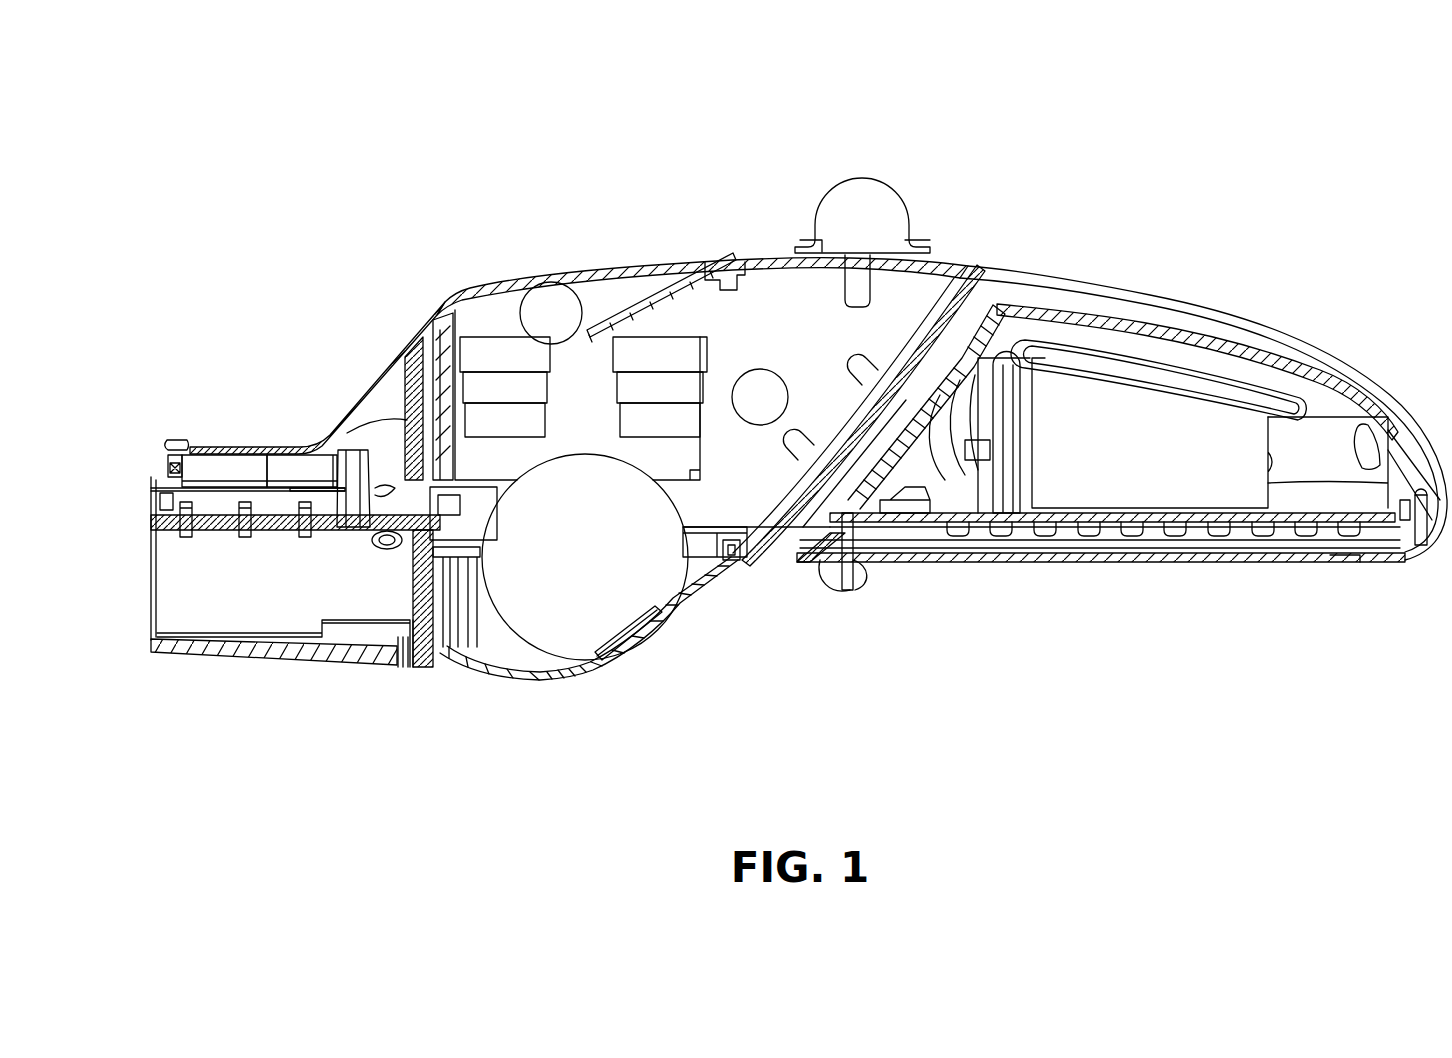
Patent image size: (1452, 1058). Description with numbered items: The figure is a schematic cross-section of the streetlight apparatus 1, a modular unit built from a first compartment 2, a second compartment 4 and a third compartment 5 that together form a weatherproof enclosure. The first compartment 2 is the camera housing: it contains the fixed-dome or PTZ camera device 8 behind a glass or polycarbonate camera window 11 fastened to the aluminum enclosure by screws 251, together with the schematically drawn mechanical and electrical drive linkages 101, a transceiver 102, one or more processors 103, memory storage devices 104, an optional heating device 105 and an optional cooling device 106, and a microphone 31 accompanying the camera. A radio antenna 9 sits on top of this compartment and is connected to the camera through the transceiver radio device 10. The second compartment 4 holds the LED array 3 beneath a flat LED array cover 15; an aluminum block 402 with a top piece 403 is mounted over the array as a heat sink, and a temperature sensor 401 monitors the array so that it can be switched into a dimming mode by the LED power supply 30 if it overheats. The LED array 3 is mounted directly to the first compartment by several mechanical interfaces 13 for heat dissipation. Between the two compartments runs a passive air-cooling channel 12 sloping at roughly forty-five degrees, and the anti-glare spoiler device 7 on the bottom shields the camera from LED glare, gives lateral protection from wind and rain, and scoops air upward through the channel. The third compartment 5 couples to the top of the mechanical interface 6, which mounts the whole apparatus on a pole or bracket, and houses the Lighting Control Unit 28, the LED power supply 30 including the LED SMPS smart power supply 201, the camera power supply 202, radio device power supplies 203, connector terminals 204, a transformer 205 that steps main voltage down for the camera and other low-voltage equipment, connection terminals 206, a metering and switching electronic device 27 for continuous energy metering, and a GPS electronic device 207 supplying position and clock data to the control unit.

The streetlight apparatus 1 is at (1168, 200).
The first compartment 2 is at (768, 285).
The LED array 3 is at (1137, 527).
The second compartment 4 is at (1225, 365).
The third compartment 5 is at (388, 460).
The mechanical interface 6 is at (240, 620).
The anti-glare spoiler device 7 is at (843, 573).
The camera device 8 is at (550, 625).
The antenna 9 is at (892, 180).
The transceiver radio device 10 is at (748, 409).
The camera window 11 is at (497, 673).
The passive air-cooling channel 12 is at (985, 300).
The mechanical interfaces 13 is at (980, 445).
The LED array cover 15 is at (1327, 540).
The metering and switching electronic device 27 is at (333, 513).
The Lighting Control Unit 28 is at (385, 460).
The LED power supply 30 is at (383, 413).
The microphone 31 is at (467, 613).
The mechanical and electrical drive linkages 101 is at (641, 430).
The transceiver 102 is at (641, 397).
The processors 103 is at (641, 364).
The memory storage devices 104 is at (486, 430).
The heating device 105 is at (486, 397).
The cooling device 106 is at (486, 364).
The LED SMPS smart power supply 201 is at (306, 465).
The camera power supply 202 is at (213, 460).
The radio device power supplies 203 is at (307, 470).
The connector terminals 204 is at (173, 460).
The transformer 205 is at (217, 473).
The connection terminals 206 is at (170, 473).
The GPS electronic device 207 is at (260, 473).
The screws 251 is at (733, 560).
The temperature sensor 401 is at (1030, 345).
The aluminum block 402 is at (1108, 460).
The top piece 403 is at (1140, 375).